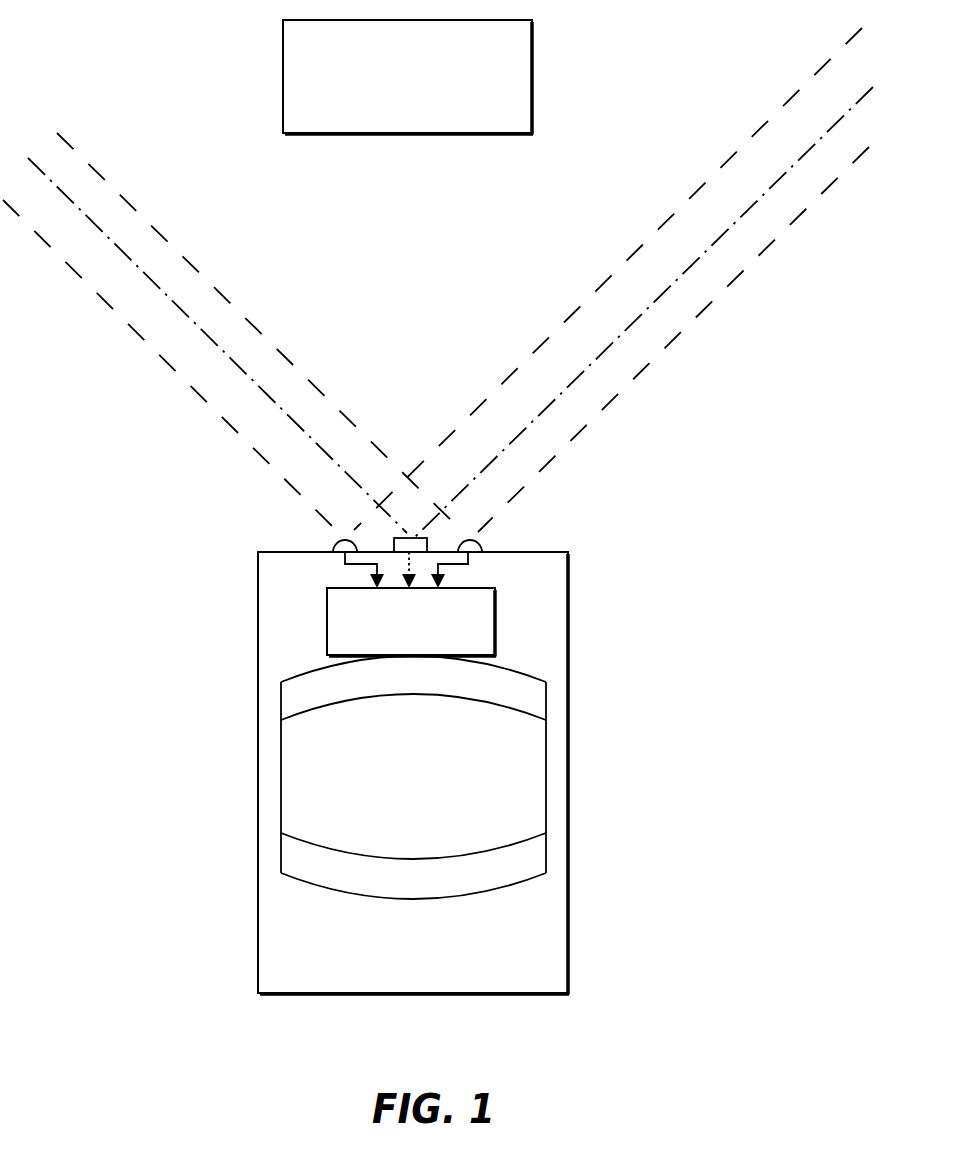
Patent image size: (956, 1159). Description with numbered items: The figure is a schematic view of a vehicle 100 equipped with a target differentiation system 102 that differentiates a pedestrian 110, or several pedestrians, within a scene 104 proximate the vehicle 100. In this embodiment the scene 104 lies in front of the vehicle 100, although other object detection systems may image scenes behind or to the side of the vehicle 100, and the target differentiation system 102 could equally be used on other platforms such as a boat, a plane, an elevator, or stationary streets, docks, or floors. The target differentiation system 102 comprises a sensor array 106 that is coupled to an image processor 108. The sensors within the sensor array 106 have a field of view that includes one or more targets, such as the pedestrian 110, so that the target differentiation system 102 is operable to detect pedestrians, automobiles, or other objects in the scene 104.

The vehicle 100 is at (569, 652).
The target differentiation system 102 is at (506, 538).
The scene 104 is at (682, 32).
The sensor array 106 is at (314, 533).
The image processor 108 is at (498, 610).
The pedestrian 110 is at (418, 135).